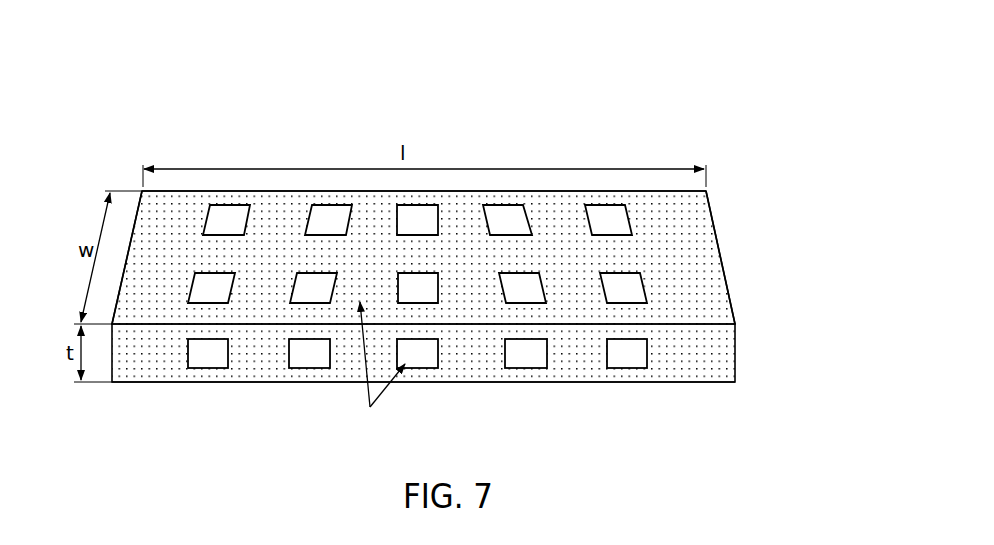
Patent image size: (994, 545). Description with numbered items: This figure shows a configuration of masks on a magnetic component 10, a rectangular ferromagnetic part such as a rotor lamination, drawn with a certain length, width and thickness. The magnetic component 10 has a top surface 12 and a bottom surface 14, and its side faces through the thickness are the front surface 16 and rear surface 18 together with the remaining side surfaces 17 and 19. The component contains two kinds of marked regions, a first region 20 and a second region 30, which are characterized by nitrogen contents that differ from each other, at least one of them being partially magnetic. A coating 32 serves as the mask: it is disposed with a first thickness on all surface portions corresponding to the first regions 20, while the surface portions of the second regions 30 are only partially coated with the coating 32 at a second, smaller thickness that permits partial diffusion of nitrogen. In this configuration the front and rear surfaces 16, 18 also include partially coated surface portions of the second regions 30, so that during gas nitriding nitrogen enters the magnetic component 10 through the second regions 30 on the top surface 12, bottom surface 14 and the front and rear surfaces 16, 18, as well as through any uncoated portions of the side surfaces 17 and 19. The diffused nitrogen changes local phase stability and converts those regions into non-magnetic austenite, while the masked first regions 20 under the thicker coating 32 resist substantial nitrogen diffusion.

The magnetic component 10 is at (429, 245).
The top surface 12 is at (702, 252).
The bottom surface 14 is at (660, 383).
The front surface 16 is at (713, 353).
The side surface 17 is at (130, 240).
The rear surface 18 is at (553, 190).
The side surface 19 is at (713, 215).
The first region 20 is at (278, 242).
The second region 30 is at (633, 343).
The coating 32 is at (390, 356).